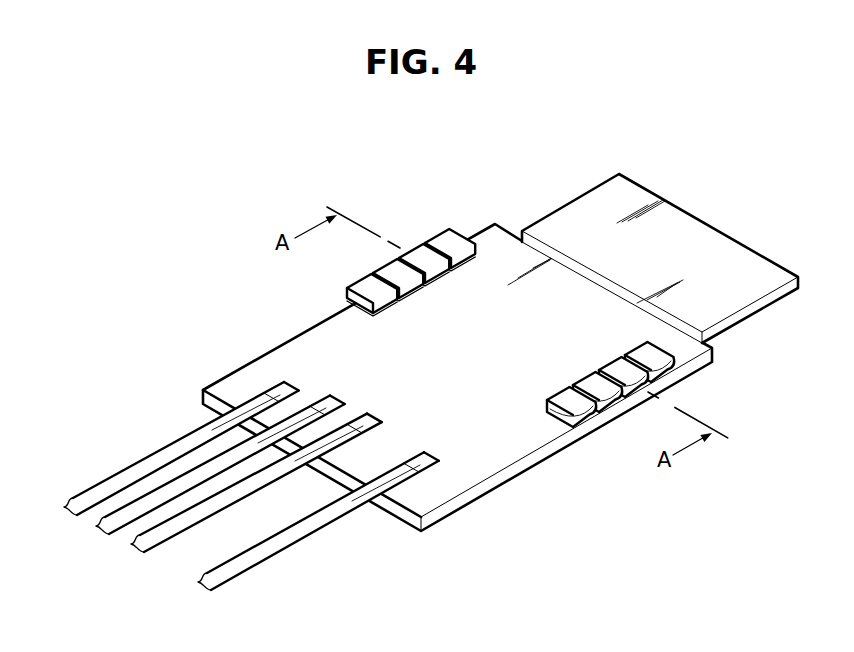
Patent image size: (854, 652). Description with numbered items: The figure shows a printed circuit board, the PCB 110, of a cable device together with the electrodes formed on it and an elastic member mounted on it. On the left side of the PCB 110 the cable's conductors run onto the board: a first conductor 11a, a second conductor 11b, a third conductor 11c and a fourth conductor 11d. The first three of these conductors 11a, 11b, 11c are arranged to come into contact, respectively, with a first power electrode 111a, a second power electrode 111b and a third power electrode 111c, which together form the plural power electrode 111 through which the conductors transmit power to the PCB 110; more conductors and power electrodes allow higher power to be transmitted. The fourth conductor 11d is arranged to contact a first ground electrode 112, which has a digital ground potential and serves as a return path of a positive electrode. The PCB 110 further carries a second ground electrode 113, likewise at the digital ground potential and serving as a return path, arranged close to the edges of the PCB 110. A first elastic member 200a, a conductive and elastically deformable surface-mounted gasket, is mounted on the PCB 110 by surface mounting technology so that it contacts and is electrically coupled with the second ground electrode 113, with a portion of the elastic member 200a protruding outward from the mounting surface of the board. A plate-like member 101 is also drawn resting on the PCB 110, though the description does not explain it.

The plate / cover member 101 is at (712, 243).
The PCB 110 is at (483, 517).
The power electrode 111 is at (256, 451).
The first power electrode 111a is at (290, 378).
The second power electrode 111b is at (330, 396).
The third power electrode 111c is at (367, 414).
The first ground electrode 112 is at (432, 458).
The second ground electrode 113 is at (557, 425).
The first elastic member 200a is at (448, 242).
The first conductor 11a is at (184, 414).
The second conductor 11b is at (209, 454).
The third conductor 11c is at (268, 491).
The fourth conductor 11d is at (331, 510).